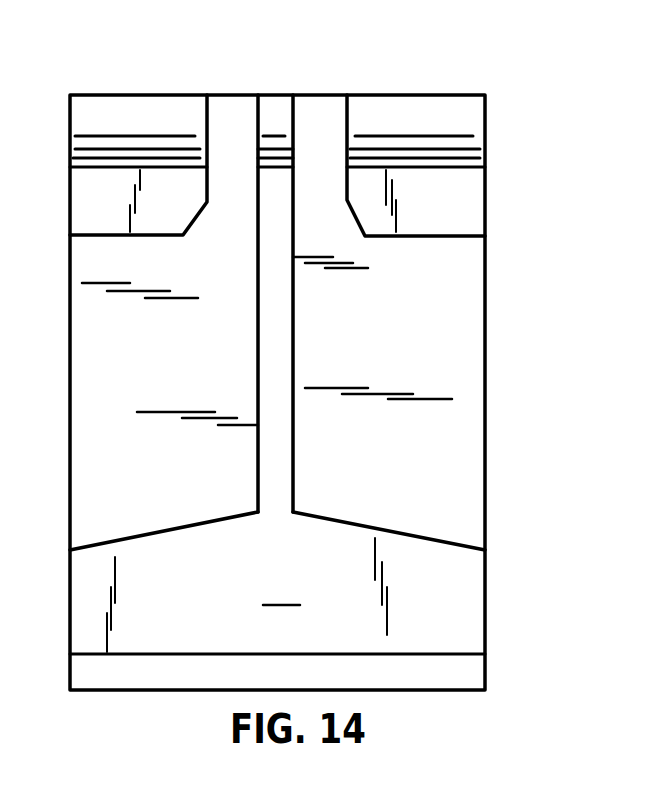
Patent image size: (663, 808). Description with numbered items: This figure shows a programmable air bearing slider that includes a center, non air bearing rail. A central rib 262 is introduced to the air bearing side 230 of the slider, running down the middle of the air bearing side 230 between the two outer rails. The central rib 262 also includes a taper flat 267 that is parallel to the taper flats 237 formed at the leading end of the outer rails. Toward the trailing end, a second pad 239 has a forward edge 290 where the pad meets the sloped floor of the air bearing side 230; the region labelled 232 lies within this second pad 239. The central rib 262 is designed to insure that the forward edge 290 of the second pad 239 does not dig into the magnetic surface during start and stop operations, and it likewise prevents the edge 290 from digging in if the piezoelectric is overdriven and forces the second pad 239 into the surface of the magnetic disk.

The air bearing side 230 is at (470, 445).
The cavity 232 is at (281, 590).
The taper flats 237 is at (473, 137).
The second pad 239 is at (473, 603).
The central rib 262 is at (280, 347).
The taper flat 267 is at (277, 102).
The forward edge 290 is at (427, 538).